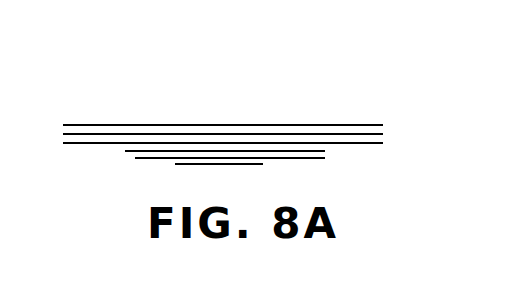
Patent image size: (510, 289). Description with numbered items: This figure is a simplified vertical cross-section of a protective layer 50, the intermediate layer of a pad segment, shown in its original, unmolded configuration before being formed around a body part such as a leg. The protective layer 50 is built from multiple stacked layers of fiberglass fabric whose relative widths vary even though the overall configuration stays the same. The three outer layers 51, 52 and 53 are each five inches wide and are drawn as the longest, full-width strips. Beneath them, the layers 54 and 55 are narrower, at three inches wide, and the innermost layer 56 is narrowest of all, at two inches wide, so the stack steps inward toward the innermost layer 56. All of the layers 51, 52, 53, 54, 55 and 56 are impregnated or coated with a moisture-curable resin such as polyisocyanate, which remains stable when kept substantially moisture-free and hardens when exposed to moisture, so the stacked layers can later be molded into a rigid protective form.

The protective layer 50 is at (70, 96).
The layer 51 is at (150, 125).
The layer 52 is at (213, 134).
The layer 53 is at (283, 143).
The layer 54 is at (138, 152).
The layer 55 is at (137, 159).
The innermost layer 56 is at (265, 165).